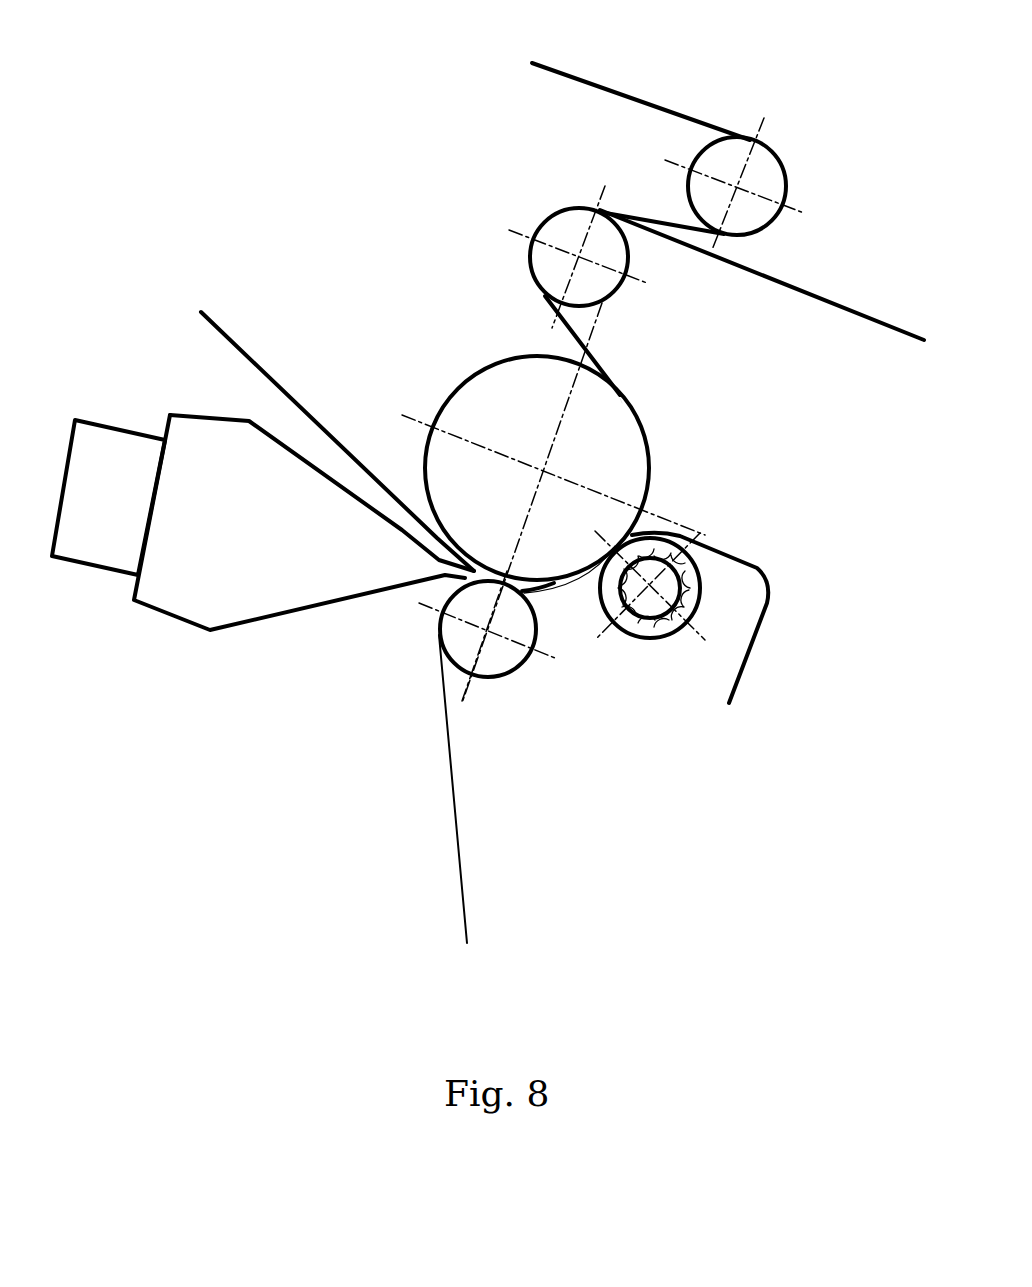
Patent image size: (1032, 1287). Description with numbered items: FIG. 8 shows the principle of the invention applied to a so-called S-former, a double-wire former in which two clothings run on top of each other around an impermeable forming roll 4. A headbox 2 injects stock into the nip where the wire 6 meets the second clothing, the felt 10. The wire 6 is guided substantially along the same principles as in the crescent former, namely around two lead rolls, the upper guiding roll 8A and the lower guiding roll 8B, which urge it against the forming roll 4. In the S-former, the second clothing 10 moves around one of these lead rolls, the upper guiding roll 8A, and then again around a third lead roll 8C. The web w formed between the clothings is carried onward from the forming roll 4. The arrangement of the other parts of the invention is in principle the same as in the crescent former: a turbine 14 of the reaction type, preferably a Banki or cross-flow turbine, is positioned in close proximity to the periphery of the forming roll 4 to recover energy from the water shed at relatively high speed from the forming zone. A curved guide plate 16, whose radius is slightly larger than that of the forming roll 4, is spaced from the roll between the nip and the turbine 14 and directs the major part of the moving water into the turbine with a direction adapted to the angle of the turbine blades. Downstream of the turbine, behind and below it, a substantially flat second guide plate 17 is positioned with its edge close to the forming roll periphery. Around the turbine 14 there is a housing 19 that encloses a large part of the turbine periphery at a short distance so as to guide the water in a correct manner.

The headbox 2 is at (293, 652).
The forming roll 4 is at (613, 443).
The wire 6 is at (460, 858).
The upper guiding roll 8A is at (590, 277).
The lower guiding roll 8B is at (492, 658).
The third lead roll 8C is at (763, 172).
The felt 10 is at (605, 83).
The turbine 14 is at (647, 602).
The guide plate 16 is at (558, 592).
The second guide plate 17 is at (632, 530).
The housing 19 is at (767, 590).
The web w is at (838, 300).